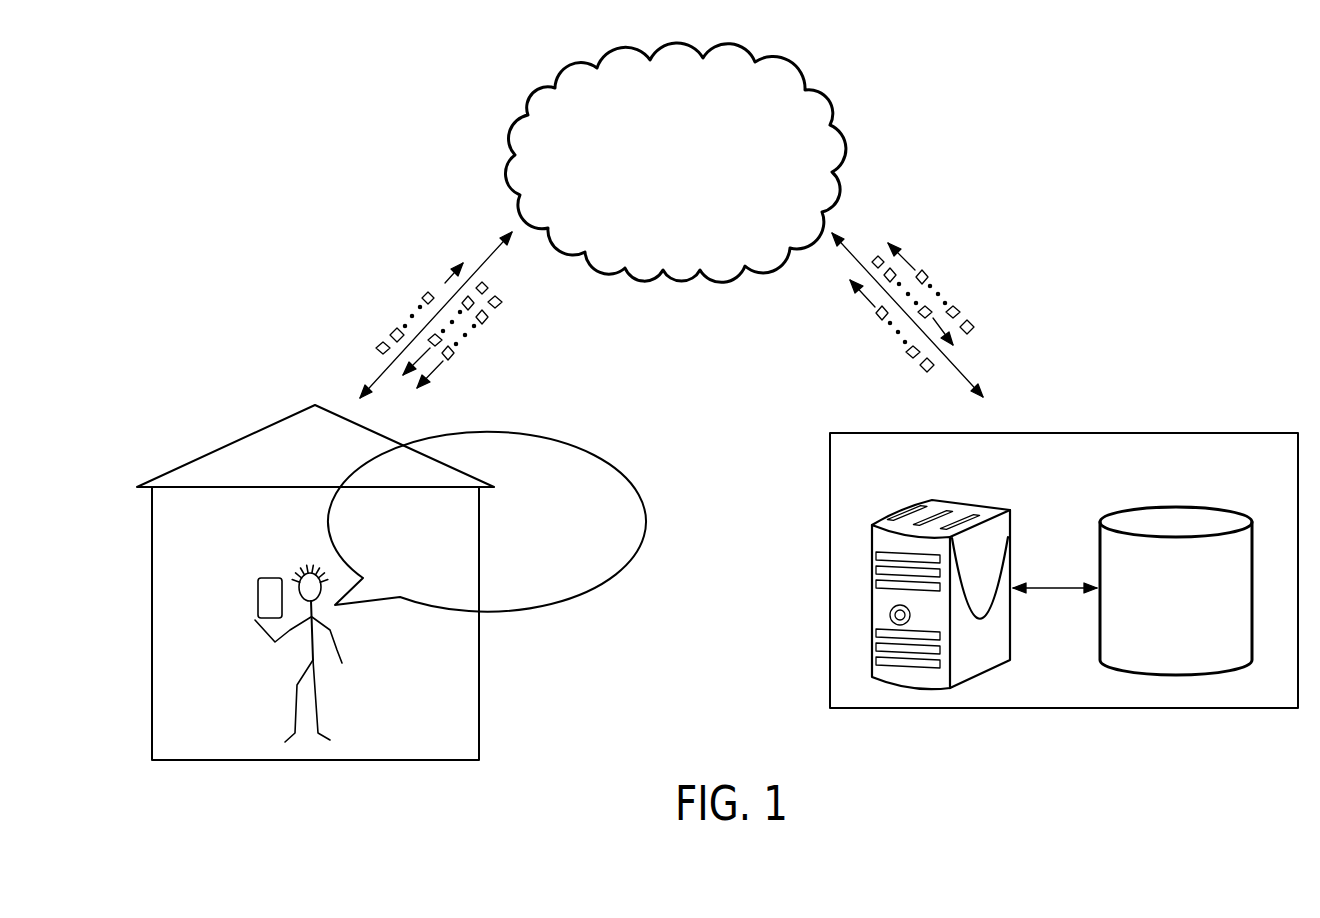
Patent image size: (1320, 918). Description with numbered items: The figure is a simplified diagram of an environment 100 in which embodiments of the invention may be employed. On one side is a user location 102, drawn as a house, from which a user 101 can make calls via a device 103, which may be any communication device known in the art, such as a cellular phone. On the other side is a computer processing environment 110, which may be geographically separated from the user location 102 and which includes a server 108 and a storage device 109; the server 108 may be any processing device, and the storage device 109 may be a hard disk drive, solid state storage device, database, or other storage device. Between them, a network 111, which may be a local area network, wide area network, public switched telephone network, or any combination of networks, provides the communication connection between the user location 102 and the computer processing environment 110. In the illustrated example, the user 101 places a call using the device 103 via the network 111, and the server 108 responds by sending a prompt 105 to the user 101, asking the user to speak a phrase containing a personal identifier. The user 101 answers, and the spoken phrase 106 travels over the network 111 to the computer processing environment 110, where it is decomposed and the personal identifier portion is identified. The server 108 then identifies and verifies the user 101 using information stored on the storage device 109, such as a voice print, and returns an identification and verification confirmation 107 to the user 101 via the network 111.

The environment 100 is at (402, 95).
The user 101 is at (340, 638).
The user location 102 is at (260, 430).
The device 103 is at (258, 587).
The prompt 105 is at (486, 284).
The spoken phrase 106 is at (1003, 362).
The identification and verification confirmation 107 is at (503, 298).
The server 108 is at (1013, 518).
The storage device 109 is at (1195, 630).
The computer processing environment 110 is at (828, 516).
The network 111 is at (700, 197).